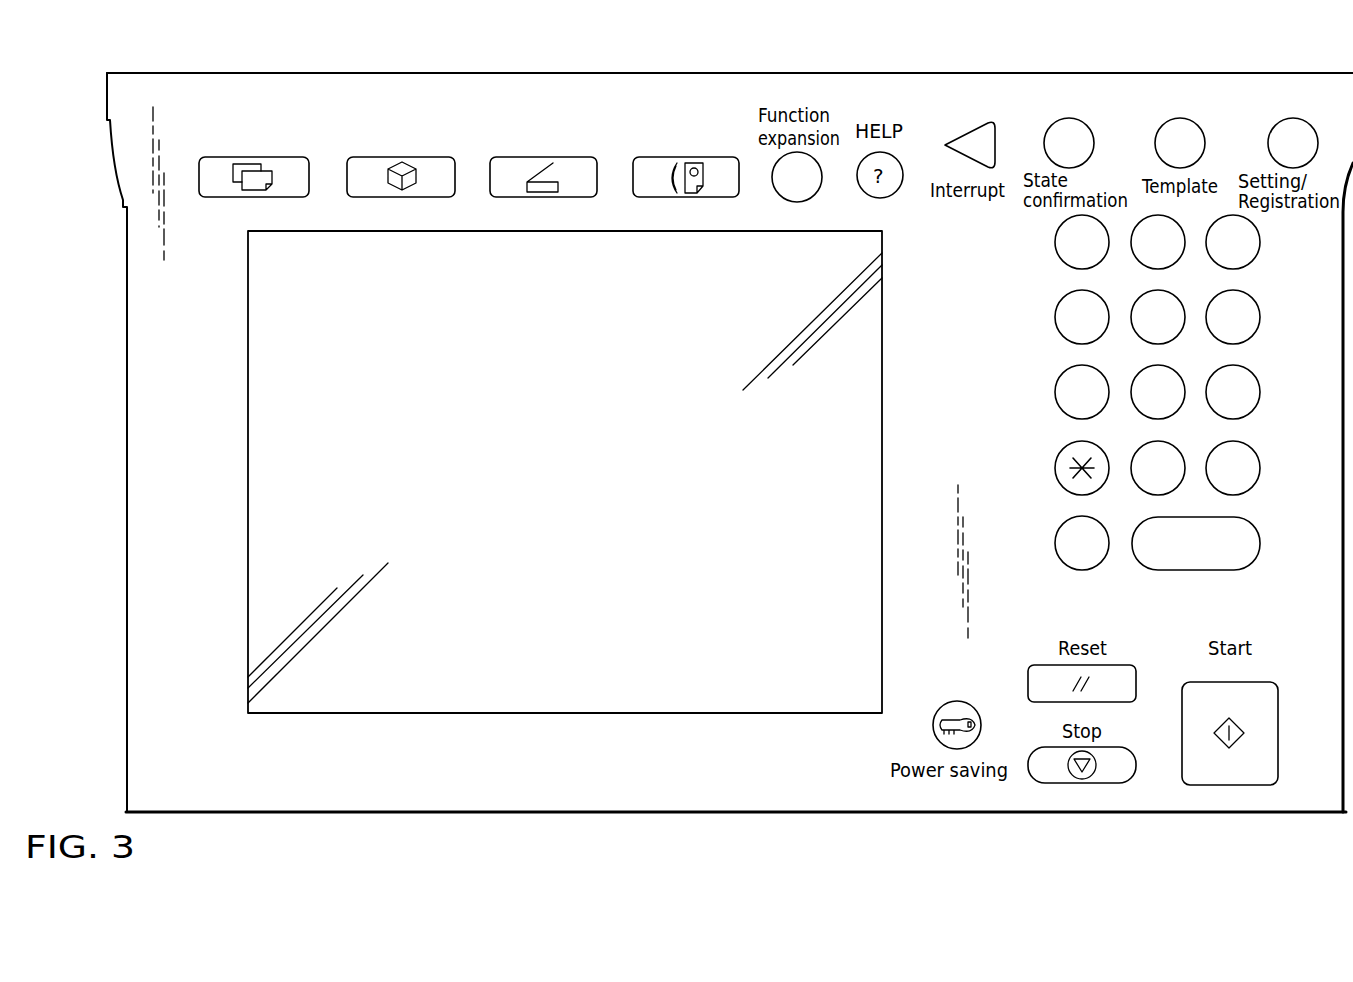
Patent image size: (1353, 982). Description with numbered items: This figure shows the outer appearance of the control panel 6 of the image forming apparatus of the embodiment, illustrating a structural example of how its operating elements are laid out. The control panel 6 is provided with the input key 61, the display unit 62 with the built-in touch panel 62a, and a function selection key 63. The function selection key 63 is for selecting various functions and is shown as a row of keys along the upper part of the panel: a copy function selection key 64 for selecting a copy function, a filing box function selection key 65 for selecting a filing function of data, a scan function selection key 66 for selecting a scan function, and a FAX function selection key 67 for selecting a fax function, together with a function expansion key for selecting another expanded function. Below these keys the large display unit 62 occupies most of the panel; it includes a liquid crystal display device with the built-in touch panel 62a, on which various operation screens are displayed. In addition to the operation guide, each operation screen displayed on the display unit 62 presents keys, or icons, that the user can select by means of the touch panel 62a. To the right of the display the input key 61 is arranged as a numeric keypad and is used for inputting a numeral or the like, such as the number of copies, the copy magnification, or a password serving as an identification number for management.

The control panel 6 is at (800, 73).
The input key 61 is at (1263, 215).
The display unit 62 is at (565, 504).
The touch panel 62a is at (593, 713).
The function selection key 63 is at (467, 124).
The copy function selection key 64 is at (258, 197).
The filing box function selection key 65 is at (400, 197).
The scan function selection key 66 is at (545, 197).
The FAX function selection key 67 is at (687, 176).